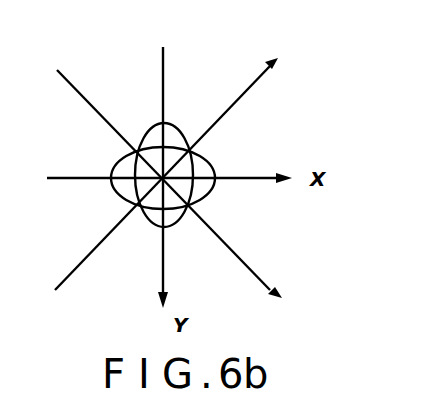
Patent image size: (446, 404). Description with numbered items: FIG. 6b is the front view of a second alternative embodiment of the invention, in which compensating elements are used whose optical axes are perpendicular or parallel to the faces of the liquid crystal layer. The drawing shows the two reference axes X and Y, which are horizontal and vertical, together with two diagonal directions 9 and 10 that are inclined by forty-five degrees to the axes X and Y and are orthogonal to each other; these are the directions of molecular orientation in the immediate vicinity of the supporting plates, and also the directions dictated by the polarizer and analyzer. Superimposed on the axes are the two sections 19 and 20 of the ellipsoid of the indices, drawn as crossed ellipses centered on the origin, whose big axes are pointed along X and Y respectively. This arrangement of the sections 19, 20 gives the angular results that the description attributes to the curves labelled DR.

The direction 9 is at (250, 85).
The direction 10 is at (246, 265).
The section of the ellipsoid of the indices 19 is at (174, 127).
The section of the ellipsoid of the indices 20 is at (209, 157).